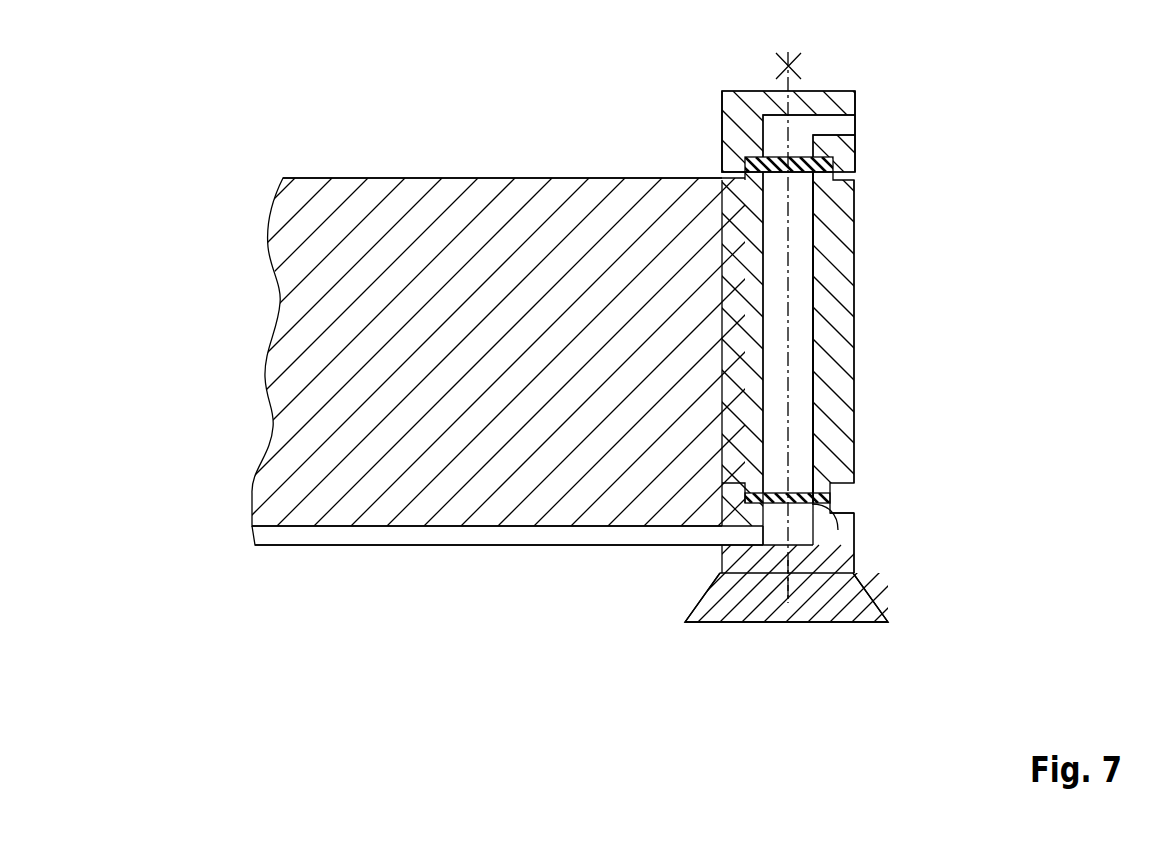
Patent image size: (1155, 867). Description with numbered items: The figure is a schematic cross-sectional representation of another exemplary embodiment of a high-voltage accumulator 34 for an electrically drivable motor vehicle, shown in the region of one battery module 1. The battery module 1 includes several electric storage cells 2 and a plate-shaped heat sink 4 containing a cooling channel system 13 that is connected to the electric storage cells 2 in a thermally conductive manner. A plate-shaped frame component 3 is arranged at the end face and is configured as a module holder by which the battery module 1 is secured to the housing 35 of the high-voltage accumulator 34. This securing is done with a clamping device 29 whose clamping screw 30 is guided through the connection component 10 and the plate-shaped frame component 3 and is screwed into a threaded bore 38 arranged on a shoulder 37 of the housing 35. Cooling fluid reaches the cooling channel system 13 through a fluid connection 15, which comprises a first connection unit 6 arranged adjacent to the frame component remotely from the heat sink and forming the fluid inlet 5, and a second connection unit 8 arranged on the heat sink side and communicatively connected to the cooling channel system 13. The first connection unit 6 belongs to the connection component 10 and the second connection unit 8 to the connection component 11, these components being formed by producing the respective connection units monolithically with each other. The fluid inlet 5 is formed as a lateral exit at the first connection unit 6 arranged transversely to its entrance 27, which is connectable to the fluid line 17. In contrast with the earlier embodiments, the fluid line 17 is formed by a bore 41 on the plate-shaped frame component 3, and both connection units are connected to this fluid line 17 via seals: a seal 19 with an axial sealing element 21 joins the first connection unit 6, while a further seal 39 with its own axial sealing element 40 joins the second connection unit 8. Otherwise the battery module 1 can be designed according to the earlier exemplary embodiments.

The battery module 1 is at (495, 168).
The electric storage cells 2 is at (390, 505).
The plate-shaped frame component 3 is at (835, 272).
The plate-shaped heat sink 4 is at (555, 547).
The fluid inlet 5 is at (856, 140).
The first connection unit 6 is at (823, 103).
The second connection unit 8 is at (828, 573).
The connection component 10 is at (742, 84).
The connection component 11 is at (866, 550).
The cooling channel system 13 is at (485, 537).
The fluid connection 15 is at (820, 330).
The fluid line 17 is at (815, 383).
The bores 41 is at (815, 383).
The seal 19 is at (842, 162).
The axial sealing element 21 is at (722, 152).
The entrance 27 is at (847, 124).
The clamping device 29 is at (795, 240).
The clamping screw 30 is at (790, 440).
The high-voltage accumulator 34 is at (283, 117).
The housing 35 is at (701, 633).
The shoulder 37 is at (740, 590).
The threaded bore 38 is at (788, 597).
The seal 39 is at (852, 494).
The axial sealing element 40 is at (838, 522).